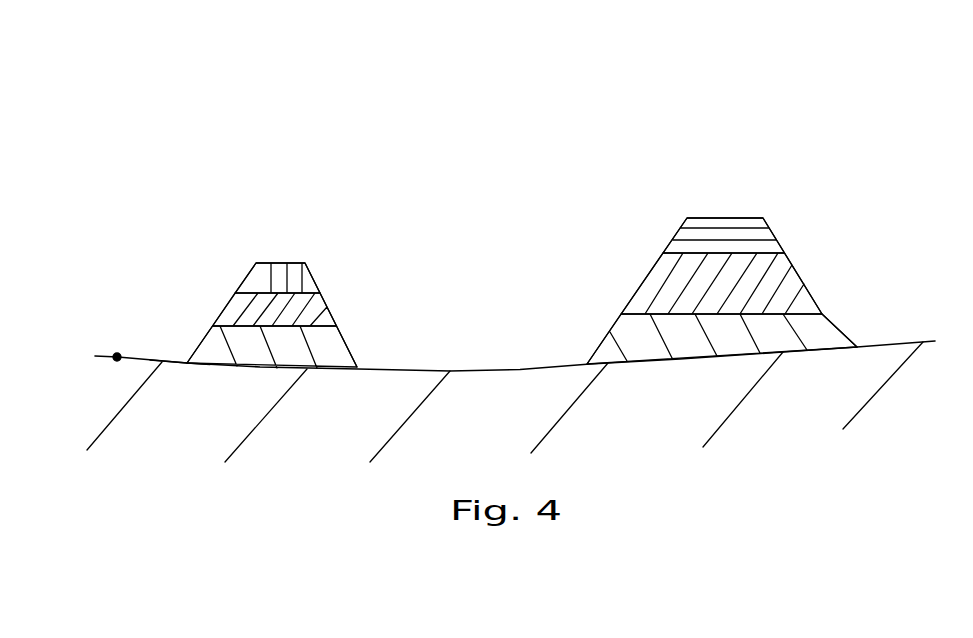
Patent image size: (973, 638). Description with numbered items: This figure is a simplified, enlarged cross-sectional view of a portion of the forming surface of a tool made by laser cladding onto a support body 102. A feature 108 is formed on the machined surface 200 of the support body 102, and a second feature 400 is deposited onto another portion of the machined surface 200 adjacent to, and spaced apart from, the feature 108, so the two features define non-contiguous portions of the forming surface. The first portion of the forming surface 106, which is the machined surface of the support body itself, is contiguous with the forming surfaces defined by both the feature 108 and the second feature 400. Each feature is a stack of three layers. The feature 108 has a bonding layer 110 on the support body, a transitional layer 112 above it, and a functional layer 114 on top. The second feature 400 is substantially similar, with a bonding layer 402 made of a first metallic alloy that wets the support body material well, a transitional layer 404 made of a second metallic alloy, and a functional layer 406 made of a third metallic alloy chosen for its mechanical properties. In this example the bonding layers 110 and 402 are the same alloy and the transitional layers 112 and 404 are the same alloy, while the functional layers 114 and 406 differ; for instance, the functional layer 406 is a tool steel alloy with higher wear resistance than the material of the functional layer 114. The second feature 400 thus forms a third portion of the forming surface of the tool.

The support body 102 is at (802, 414).
The first portion of the forming surface 106 is at (181, 359).
The feature 108 is at (770, 206).
The bonding layer 110 is at (840, 328).
The transitional layer 112 is at (800, 277).
The functional layer 114 is at (765, 220).
The machined surface 200 is at (117, 357).
The second feature 400 is at (343, 220).
The bonding layer 402 is at (357, 348).
The transitional layer 404 is at (332, 307).
The functional layer 406 is at (288, 262).